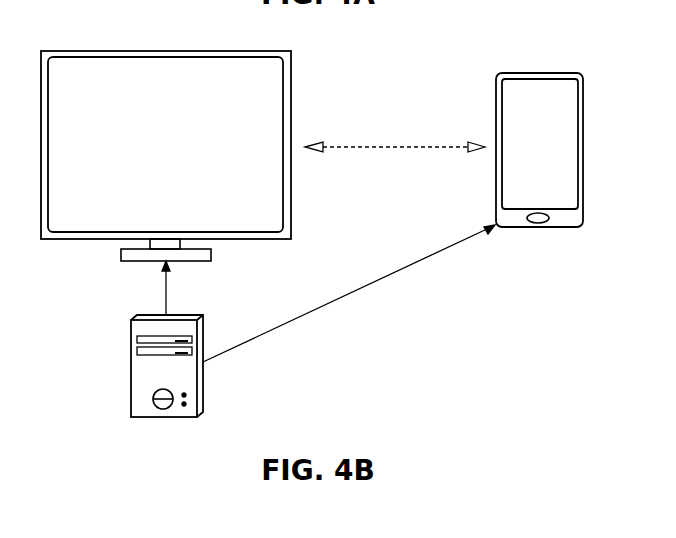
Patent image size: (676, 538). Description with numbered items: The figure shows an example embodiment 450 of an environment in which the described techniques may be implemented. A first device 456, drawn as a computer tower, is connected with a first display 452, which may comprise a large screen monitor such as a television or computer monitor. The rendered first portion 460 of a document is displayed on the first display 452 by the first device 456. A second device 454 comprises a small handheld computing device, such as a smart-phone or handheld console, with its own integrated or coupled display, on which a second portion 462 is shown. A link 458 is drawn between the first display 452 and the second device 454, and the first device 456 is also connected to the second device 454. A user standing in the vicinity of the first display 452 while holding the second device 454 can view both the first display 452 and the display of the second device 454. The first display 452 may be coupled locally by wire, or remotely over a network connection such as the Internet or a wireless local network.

The example embodiment 450 is at (118, 27).
The first display 452 is at (291, 97).
The second device 454 is at (543, 73).
The first device 456 is at (131, 360).
The communication link 458 is at (388, 147).
The first portion 460 is at (166, 145).
The second portion 462 is at (538, 144).